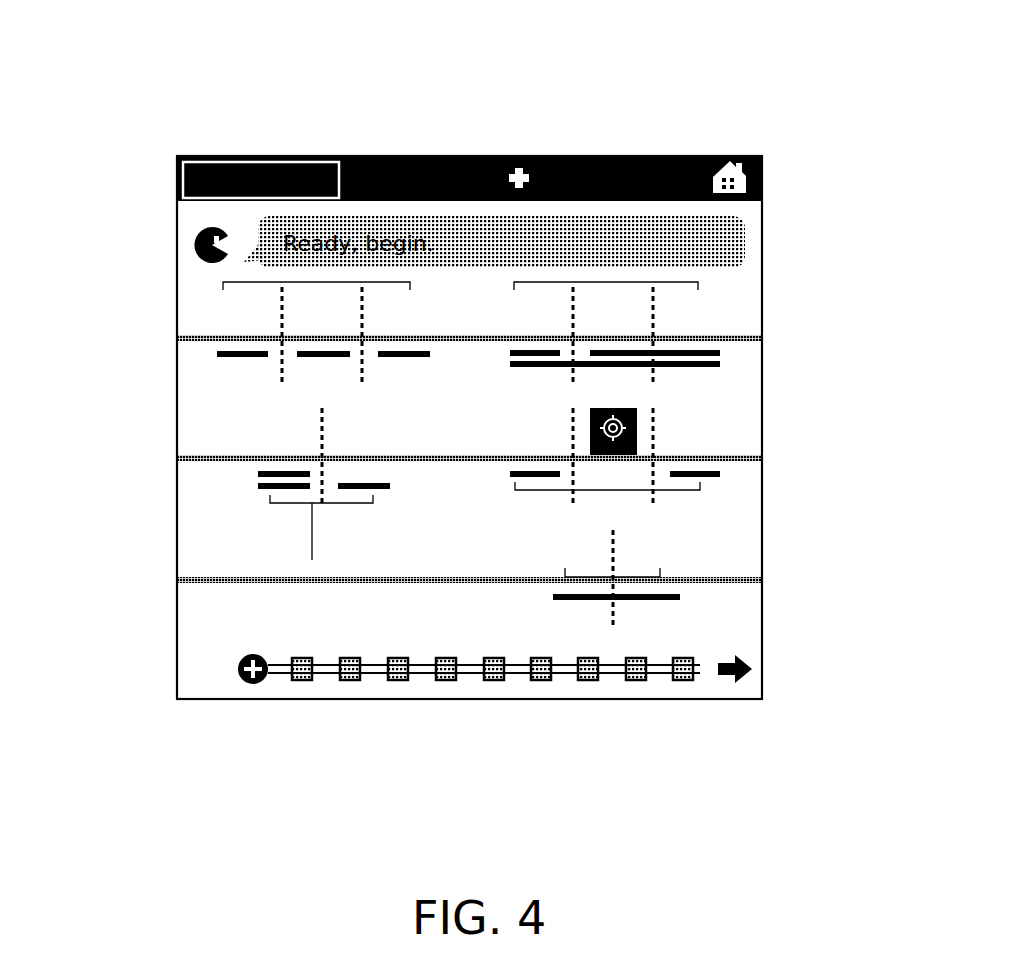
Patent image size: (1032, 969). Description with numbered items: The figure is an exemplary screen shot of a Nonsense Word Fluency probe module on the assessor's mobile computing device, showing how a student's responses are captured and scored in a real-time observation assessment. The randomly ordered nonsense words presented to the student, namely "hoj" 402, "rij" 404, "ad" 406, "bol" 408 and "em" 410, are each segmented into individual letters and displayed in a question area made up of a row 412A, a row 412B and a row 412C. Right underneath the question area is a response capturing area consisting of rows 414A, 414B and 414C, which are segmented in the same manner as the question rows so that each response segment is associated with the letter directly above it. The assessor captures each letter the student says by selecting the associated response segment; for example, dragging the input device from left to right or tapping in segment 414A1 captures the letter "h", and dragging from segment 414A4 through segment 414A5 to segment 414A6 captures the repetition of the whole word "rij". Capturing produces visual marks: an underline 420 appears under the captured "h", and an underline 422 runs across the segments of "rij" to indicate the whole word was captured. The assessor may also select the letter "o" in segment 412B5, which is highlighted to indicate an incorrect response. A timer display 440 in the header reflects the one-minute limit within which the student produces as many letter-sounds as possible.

The nonsense word "hoj" 402 is at (262, 283).
The nonsense word "rij" 404 is at (608, 282).
The nonsense word "ad" 406 is at (321, 540).
The nonsense word "bol" 408 is at (598, 490).
The nonsense word "em" 410 is at (632, 577).
The question area row 412A is at (496, 232).
The question area row 412B is at (507, 497).
The letter segment "o" 412B5 is at (613, 445).
The question area row 412C is at (609, 677).
The response capturing area row 414A is at (480, 241).
The response capturing segment 414A1 is at (212, 369).
The response capturing segment 414A4 is at (542, 380).
The response capturing segment 414A5 is at (597, 377).
The response capturing segment 414A6 is at (737, 359).
The response capturing area row 414B is at (748, 486).
The response capturing area row 414C is at (748, 612).
The underline 420 is at (240, 360).
The underline 422 is at (510, 368).
The timer display 440 is at (300, 178).